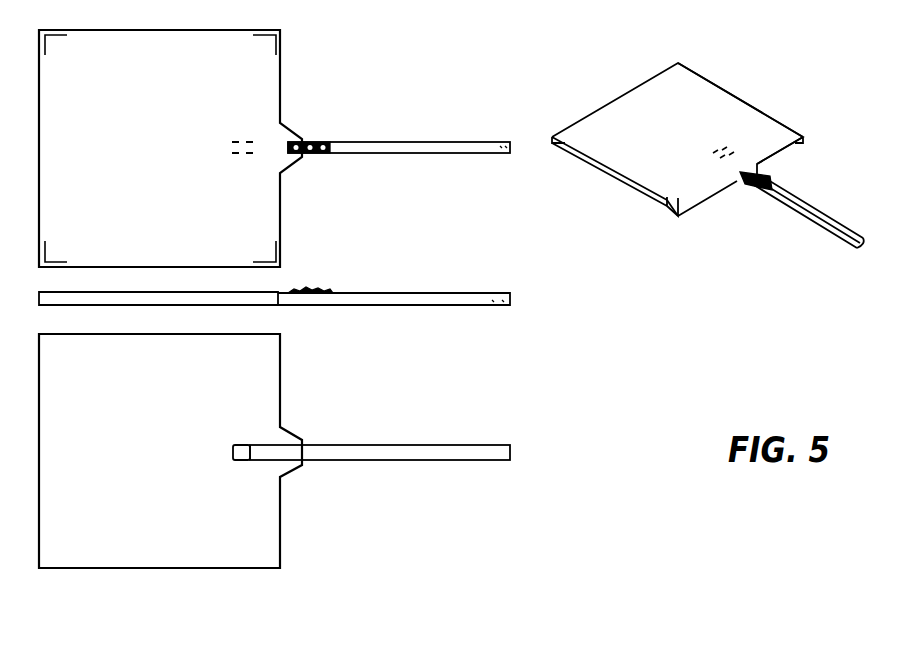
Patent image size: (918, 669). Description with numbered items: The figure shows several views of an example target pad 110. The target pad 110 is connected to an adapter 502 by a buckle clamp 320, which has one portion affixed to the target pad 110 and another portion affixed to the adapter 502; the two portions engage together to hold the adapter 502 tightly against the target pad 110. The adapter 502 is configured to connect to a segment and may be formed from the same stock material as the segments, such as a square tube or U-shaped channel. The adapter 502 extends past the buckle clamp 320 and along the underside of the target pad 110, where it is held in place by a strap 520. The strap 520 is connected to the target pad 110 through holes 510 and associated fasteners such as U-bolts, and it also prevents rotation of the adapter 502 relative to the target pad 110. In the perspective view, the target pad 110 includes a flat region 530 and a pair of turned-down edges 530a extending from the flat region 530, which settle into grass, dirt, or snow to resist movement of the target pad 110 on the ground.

The target pad 110 is at (138, 116).
The holes 510 is at (240, 128).
The buckle clamp 320 is at (305, 142).
The adapter 502 is at (411, 147).
The strap 520 is at (241, 462).
The flat region 530 is at (711, 98).
The turned-down edges 530a is at (803, 139).